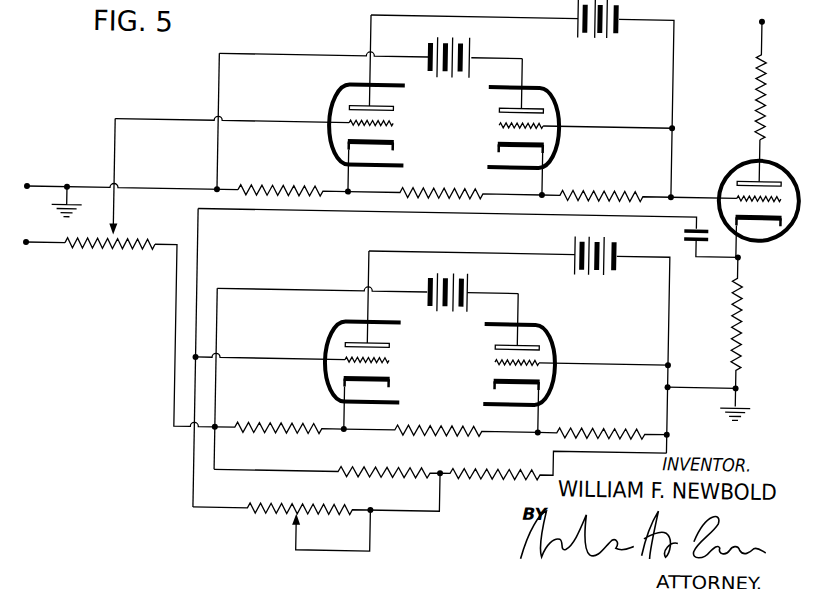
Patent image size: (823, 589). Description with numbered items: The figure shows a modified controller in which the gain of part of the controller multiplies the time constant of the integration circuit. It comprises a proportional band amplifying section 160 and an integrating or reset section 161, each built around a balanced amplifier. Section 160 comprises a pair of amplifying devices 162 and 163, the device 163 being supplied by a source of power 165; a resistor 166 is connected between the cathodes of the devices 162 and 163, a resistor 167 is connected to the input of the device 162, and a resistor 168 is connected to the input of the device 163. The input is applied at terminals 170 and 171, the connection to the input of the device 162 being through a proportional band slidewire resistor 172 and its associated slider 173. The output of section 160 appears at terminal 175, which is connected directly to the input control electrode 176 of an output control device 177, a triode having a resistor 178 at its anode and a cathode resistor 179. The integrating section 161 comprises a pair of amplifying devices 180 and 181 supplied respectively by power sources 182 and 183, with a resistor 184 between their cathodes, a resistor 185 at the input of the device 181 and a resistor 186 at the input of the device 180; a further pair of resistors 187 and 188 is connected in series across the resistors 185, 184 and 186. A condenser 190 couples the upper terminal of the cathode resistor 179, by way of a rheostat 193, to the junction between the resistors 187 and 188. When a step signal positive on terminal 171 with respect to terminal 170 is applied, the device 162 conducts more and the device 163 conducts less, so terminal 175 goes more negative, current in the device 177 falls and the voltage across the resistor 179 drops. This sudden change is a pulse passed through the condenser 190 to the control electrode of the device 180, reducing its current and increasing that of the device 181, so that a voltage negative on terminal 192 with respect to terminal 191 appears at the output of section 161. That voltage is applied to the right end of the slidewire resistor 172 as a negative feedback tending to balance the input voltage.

The proportional band amplifying section 160 is at (461, 128).
The integrating or reset section 161 is at (462, 361).
The amplifying device 162 is at (333, 94).
The amplifying device 163 is at (554, 95).
The source of power 165 is at (462, 37).
The resistor 166 is at (441, 182).
The resistor 167 is at (278, 174).
The resistor 168 is at (599, 178).
The input terminal 170 is at (28, 183).
The input terminal 171 is at (28, 240).
The proportional band slidewire resistor 172 is at (96, 250).
The slider 173 is at (118, 231).
The output terminal 175 is at (673, 184).
The input control electrode 176 is at (738, 185).
The output control device 177 is at (737, 189).
The resistor 178 is at (753, 77).
The cathode resistor 179 is at (746, 309).
The amplifying device 180 is at (338, 332).
The amplifying device 181 is at (549, 336).
The power source 182 is at (602, 234).
The power source 183 is at (459, 275).
The resistor 184 is at (441, 416).
The resistor 185 is at (603, 418).
The resistor 186 is at (274, 416).
The resistor 187 is at (380, 462).
The resistor 188 is at (494, 460).
The condenser 190 is at (676, 250).
The output terminal 191 is at (674, 424).
The output terminal 192 is at (220, 428).
The rheostat 193 is at (275, 521).